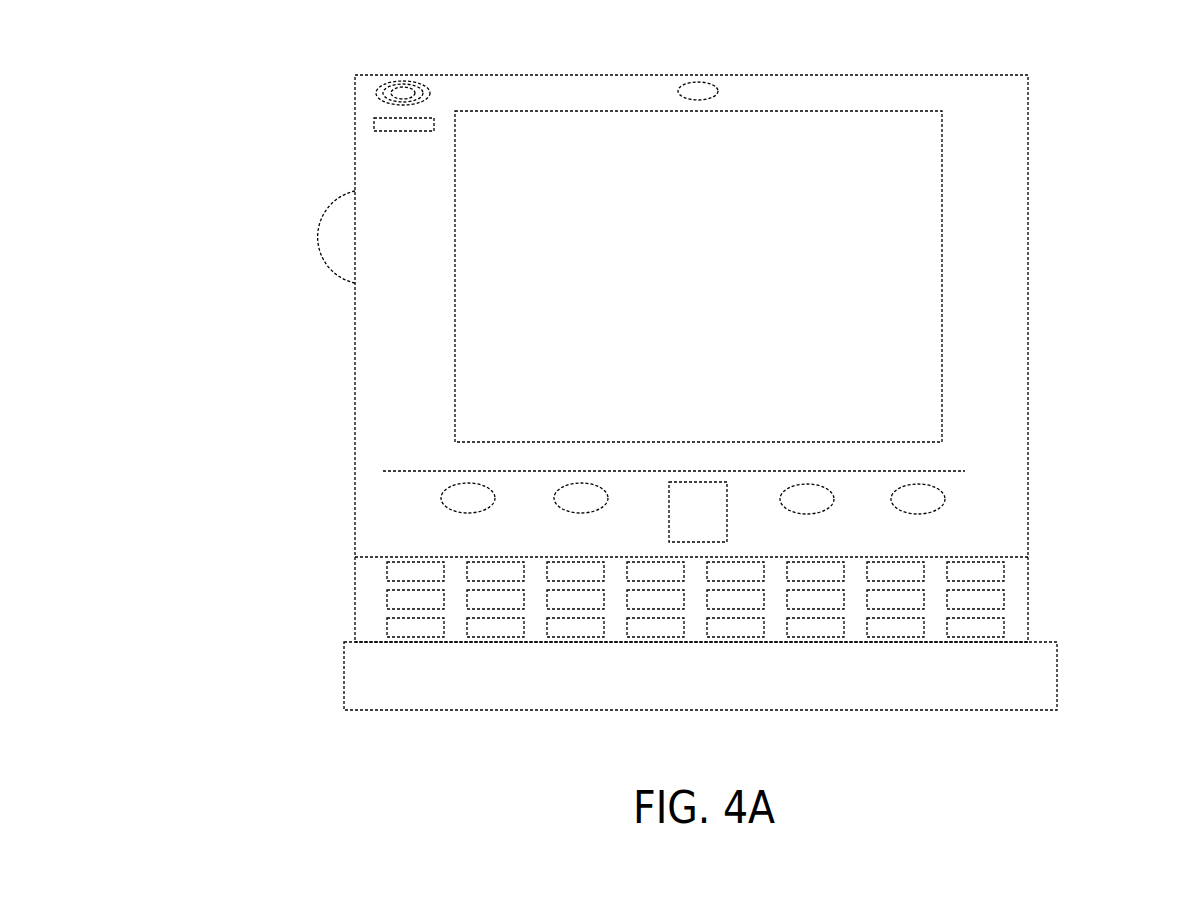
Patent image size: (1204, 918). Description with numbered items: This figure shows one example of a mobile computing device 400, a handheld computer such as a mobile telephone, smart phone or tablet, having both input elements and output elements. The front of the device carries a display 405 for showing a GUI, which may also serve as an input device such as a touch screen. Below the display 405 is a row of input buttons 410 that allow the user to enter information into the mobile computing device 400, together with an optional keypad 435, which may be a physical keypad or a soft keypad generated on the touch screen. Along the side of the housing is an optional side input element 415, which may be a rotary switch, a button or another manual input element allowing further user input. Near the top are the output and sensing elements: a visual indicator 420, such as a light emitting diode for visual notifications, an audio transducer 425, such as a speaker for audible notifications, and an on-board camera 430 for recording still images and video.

The mobile computing device 400 is at (1013, 86).
The display 405 is at (603, 385).
The input buttons 410 is at (700, 517).
The side input element 415 is at (342, 237).
The visual indicator 420 is at (375, 128).
The audio transducer 425 is at (378, 93).
The on-board camera 430 is at (718, 92).
The keypad 435 is at (368, 631).